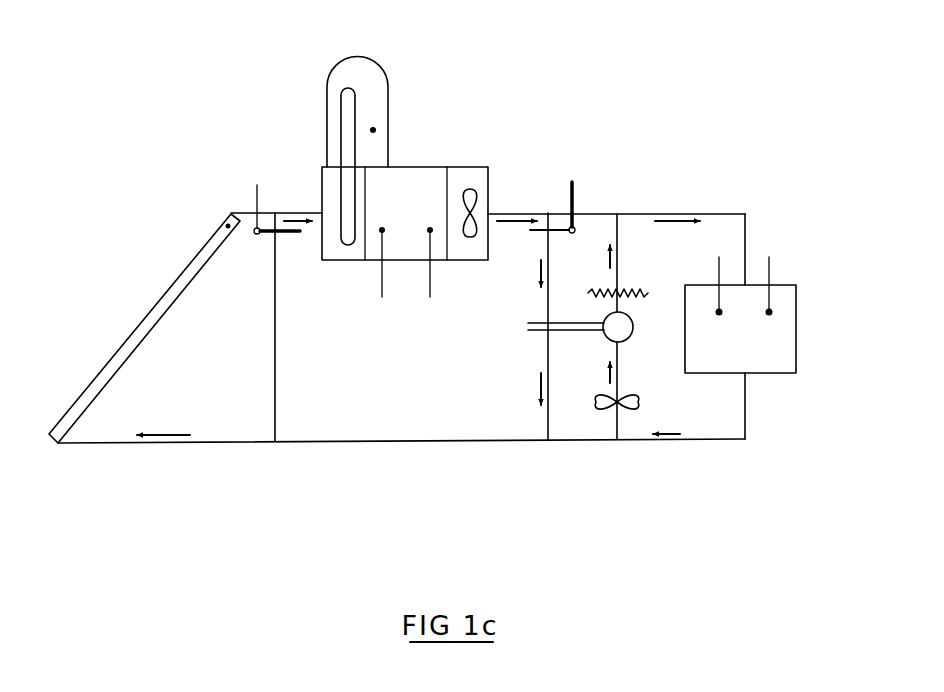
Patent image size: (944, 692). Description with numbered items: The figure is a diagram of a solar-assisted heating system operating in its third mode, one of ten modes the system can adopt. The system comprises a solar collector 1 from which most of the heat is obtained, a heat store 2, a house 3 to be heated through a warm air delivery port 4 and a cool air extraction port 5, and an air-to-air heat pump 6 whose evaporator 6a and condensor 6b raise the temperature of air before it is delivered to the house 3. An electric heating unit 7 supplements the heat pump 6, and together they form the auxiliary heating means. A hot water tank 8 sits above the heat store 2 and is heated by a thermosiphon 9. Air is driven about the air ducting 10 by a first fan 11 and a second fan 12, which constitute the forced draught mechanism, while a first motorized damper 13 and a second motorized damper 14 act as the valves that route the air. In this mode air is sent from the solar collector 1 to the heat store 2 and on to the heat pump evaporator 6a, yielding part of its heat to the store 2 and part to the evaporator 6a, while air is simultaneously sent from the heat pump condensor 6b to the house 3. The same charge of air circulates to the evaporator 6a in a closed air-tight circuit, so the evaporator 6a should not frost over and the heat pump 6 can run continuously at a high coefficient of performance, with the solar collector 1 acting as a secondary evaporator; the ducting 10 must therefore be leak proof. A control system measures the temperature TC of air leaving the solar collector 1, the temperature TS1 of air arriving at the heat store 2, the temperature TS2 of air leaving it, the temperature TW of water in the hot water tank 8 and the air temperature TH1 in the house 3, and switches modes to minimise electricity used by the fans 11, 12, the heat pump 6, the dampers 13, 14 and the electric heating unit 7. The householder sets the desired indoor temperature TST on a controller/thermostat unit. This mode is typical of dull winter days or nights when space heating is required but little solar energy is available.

The solar collector 1 is at (163, 304).
The heat store 2 is at (412, 182).
The house 3 is at (762, 345).
The warm air delivery port 4 is at (748, 267).
The cool air extraction port 5 is at (748, 378).
The air-to-air heat pump 6 is at (580, 349).
The heat pump evaporator 6a is at (548, 328).
The heat pump condensor 6b is at (633, 327).
The electric heating unit 7 is at (630, 287).
The hot water tank 8 is at (370, 78).
The thermosiphon 9 is at (342, 113).
The air ducting 10 is at (422, 441).
The first fan 11 is at (477, 182).
The second fan 12 is at (613, 410).
The first motorized damper 13 is at (257, 207).
The second motorized damper 14 is at (573, 198).
The temperature of air leaving the solar collector TC is at (228, 226).
The temperature of water in the hot water tank TW is at (373, 130).
The temperature of air arriving at the heat store TS1 is at (387, 283).
The temperature of air leaving the heat store TS2 is at (435, 283).
The air temperature in the house TH1 is at (719, 267).
The desired indoor temperature TST is at (769, 267).